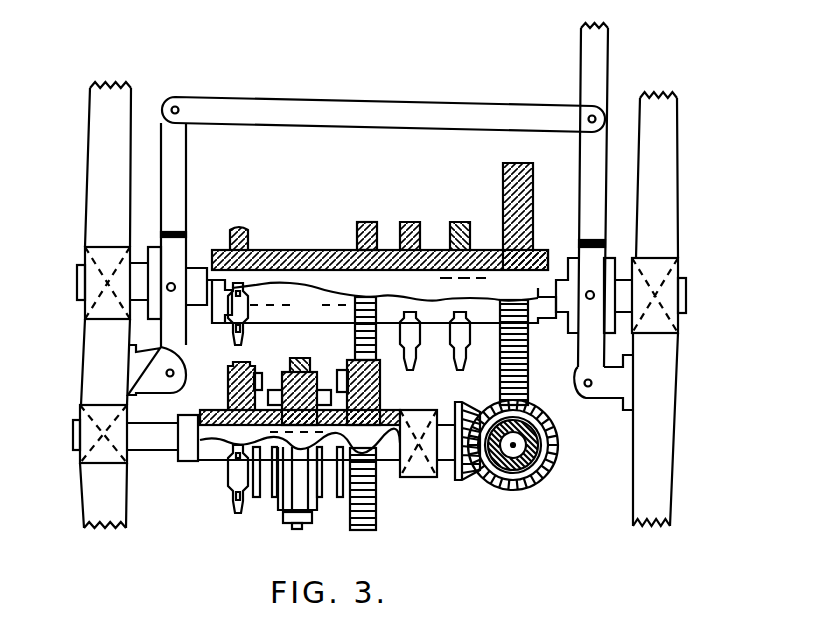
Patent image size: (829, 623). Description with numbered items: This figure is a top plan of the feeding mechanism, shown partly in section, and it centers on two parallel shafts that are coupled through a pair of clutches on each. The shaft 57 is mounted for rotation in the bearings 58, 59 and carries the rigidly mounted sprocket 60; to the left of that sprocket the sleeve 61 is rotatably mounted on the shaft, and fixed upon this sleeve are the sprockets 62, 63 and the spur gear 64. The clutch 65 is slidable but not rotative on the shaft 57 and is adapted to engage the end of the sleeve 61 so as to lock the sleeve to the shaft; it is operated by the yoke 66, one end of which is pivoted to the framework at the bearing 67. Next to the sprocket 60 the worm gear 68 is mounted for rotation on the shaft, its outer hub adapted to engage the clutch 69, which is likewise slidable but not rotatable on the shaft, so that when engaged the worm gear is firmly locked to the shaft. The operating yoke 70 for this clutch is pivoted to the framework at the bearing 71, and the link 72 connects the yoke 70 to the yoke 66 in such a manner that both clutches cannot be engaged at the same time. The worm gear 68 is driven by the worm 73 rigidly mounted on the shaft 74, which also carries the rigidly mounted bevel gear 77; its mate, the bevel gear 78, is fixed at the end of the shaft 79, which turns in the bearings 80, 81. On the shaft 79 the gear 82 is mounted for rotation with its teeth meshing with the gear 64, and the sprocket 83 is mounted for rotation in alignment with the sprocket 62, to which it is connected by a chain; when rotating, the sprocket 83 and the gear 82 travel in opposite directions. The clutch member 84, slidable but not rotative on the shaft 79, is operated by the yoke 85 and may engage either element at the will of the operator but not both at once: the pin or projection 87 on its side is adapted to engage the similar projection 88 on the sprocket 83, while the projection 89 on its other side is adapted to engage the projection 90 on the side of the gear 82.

The shaft 57 is at (381, 300).
The bearing 58 is at (82, 256).
The bearing 59 is at (680, 265).
The sprocket 60 is at (458, 222).
The sleeve 61 is at (308, 252).
The sprocket 62 is at (240, 233).
The sprocket 63 is at (411, 222).
The spur gear 64 is at (360, 222).
The clutch 65 is at (190, 253).
The yoke 66 is at (180, 165).
The bearing 67 is at (157, 370).
The worm gear 68 is at (503, 176).
The clutch 69 is at (571, 262).
The operating yoke 70 is at (580, 72).
The bearing 71 is at (603, 382).
The link 72 is at (383, 114).
The worm 73 is at (530, 438).
The shaft 74 is at (520, 448).
The bevel gear 77 is at (500, 490).
The bevel gear 78 is at (458, 484).
The shaft 79 is at (291, 435).
The bearing 80 is at (126, 462).
The bearing 81 is at (428, 470).
The gear 82 is at (380, 393).
The sprocket 83 is at (228, 388).
The clutch member 84 is at (284, 497).
The yoke 85 is at (305, 518).
The pin or projection 87 is at (284, 373).
The projection 88 is at (257, 373).
The projection 89 is at (323, 390).
The projection 90 is at (340, 370).